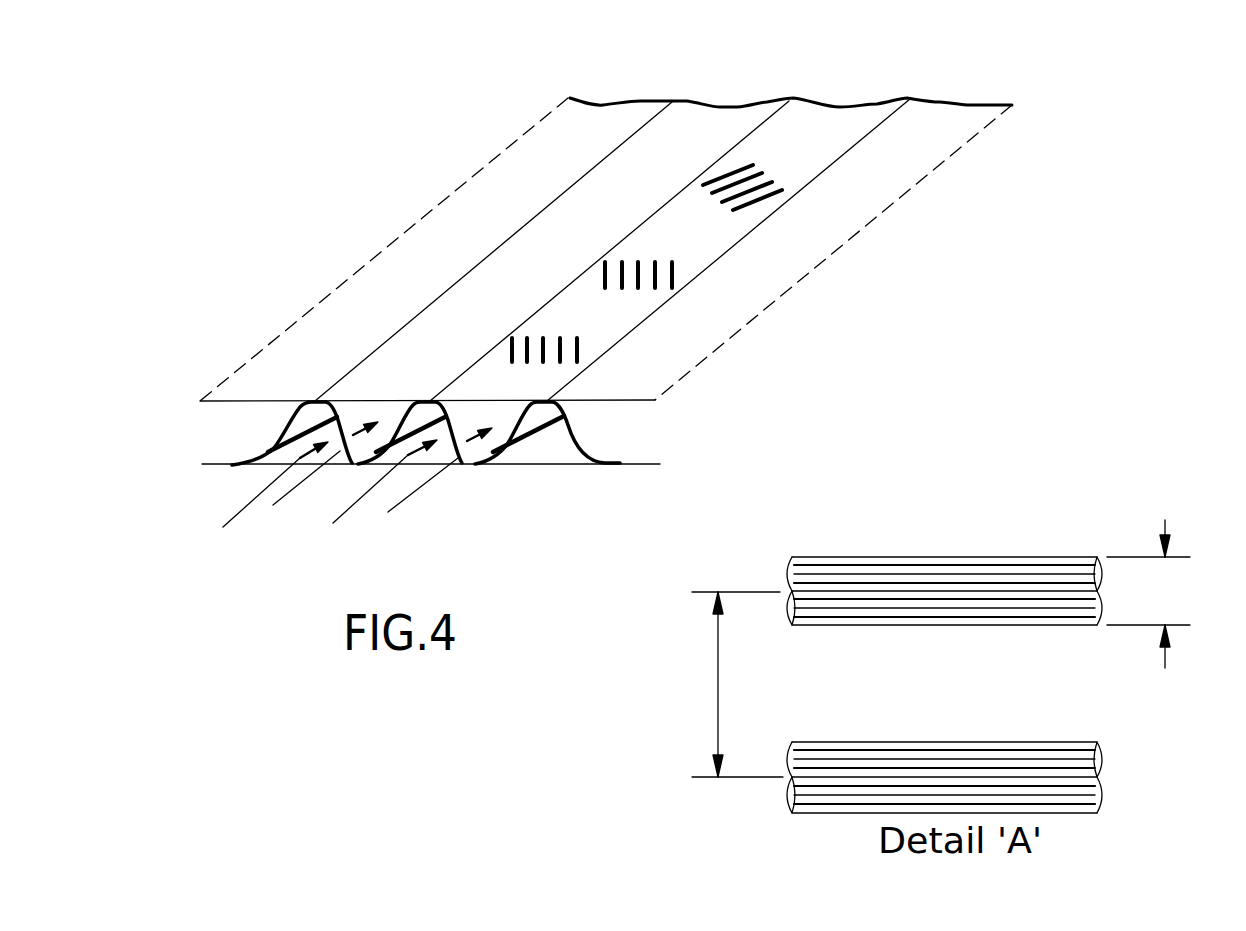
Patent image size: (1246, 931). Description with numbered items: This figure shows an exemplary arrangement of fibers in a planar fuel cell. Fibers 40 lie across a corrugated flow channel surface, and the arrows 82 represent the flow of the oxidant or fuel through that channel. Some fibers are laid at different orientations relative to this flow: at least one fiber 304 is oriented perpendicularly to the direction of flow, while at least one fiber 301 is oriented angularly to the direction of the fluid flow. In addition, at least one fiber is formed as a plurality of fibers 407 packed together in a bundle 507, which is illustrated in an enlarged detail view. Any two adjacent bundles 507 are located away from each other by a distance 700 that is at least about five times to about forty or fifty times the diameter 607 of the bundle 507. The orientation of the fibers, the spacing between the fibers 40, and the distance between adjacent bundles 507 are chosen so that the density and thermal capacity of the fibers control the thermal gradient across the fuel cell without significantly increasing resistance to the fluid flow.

The fiber 301 is at (753, 165).
The fiber 304 is at (510, 337).
The bundle 507 is at (672, 277).
The arrows 82 is at (357, 478).
The fibers 40 is at (787, 565).
The fibers 407 is at (1002, 577).
The diameter 607 is at (1165, 592).
The distance 700 is at (718, 700).